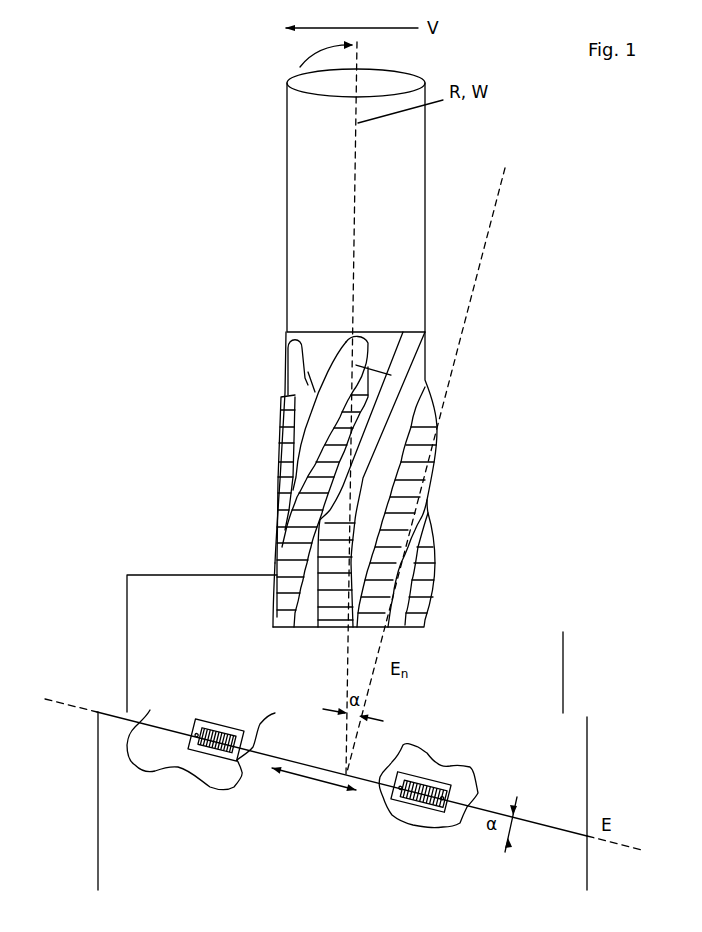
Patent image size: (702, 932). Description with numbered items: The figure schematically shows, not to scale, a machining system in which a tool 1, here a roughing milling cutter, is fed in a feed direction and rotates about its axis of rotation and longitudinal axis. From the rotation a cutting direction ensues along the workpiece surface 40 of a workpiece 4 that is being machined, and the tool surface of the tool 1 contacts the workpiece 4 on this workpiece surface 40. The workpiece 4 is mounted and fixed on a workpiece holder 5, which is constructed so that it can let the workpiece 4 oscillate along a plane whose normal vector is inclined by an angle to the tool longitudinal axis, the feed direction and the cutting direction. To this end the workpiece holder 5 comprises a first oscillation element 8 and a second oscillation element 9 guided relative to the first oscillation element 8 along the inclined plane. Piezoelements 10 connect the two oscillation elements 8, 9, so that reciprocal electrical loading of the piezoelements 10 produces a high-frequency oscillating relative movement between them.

The tool 1 is at (249, 177).
The workpiece 4 is at (141, 601).
The workpiece holder 5 is at (90, 699).
The first oscillation element 8 is at (112, 800).
The second oscillation element 9 is at (562, 735).
The piezoelements 10 is at (407, 420).
The workpiece surface 40 is at (273, 595).